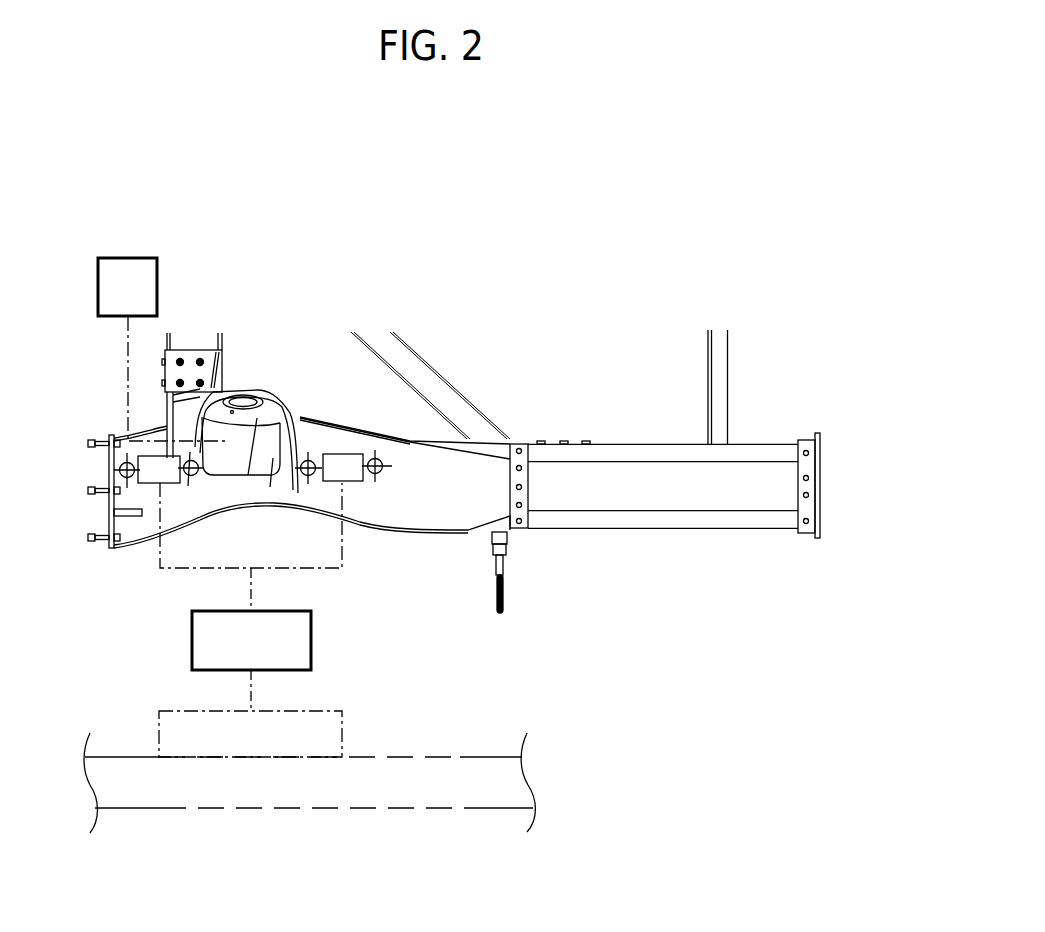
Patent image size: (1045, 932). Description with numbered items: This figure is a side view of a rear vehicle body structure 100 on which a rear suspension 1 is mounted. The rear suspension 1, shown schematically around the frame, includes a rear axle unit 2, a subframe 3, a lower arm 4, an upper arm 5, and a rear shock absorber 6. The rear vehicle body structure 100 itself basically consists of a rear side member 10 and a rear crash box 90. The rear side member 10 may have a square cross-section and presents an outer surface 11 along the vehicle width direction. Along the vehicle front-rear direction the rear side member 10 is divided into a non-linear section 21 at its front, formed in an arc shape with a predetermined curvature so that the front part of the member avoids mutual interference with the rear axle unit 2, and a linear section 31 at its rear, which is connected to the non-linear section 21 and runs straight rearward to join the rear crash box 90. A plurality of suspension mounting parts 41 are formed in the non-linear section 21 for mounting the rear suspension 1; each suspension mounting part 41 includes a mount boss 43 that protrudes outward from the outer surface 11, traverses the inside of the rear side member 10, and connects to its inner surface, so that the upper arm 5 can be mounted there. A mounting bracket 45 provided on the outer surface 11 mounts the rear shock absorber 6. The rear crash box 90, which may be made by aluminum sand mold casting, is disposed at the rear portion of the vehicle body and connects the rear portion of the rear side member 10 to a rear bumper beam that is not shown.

The rear vehicle body structure 100 is at (448, 201).
The rear suspension 1 is at (148, 678).
The rear axle unit 2 is at (311, 637).
The subframe 3 is at (232, 810).
The lower arm 4 is at (342, 718).
The upper arm 5 is at (170, 568).
The rear shock absorber 6 is at (98, 287).
The rear side member 10 is at (332, 305).
The outer surface 11 is at (452, 492).
The non-linear section 21 is at (307, 418).
The linear section 31 is at (425, 438).
The suspension mounting part 41 is at (383, 475).
The mount boss 43 is at (120, 466).
The mounting bracket 45 is at (232, 392).
The rear crash box 90 is at (607, 437).